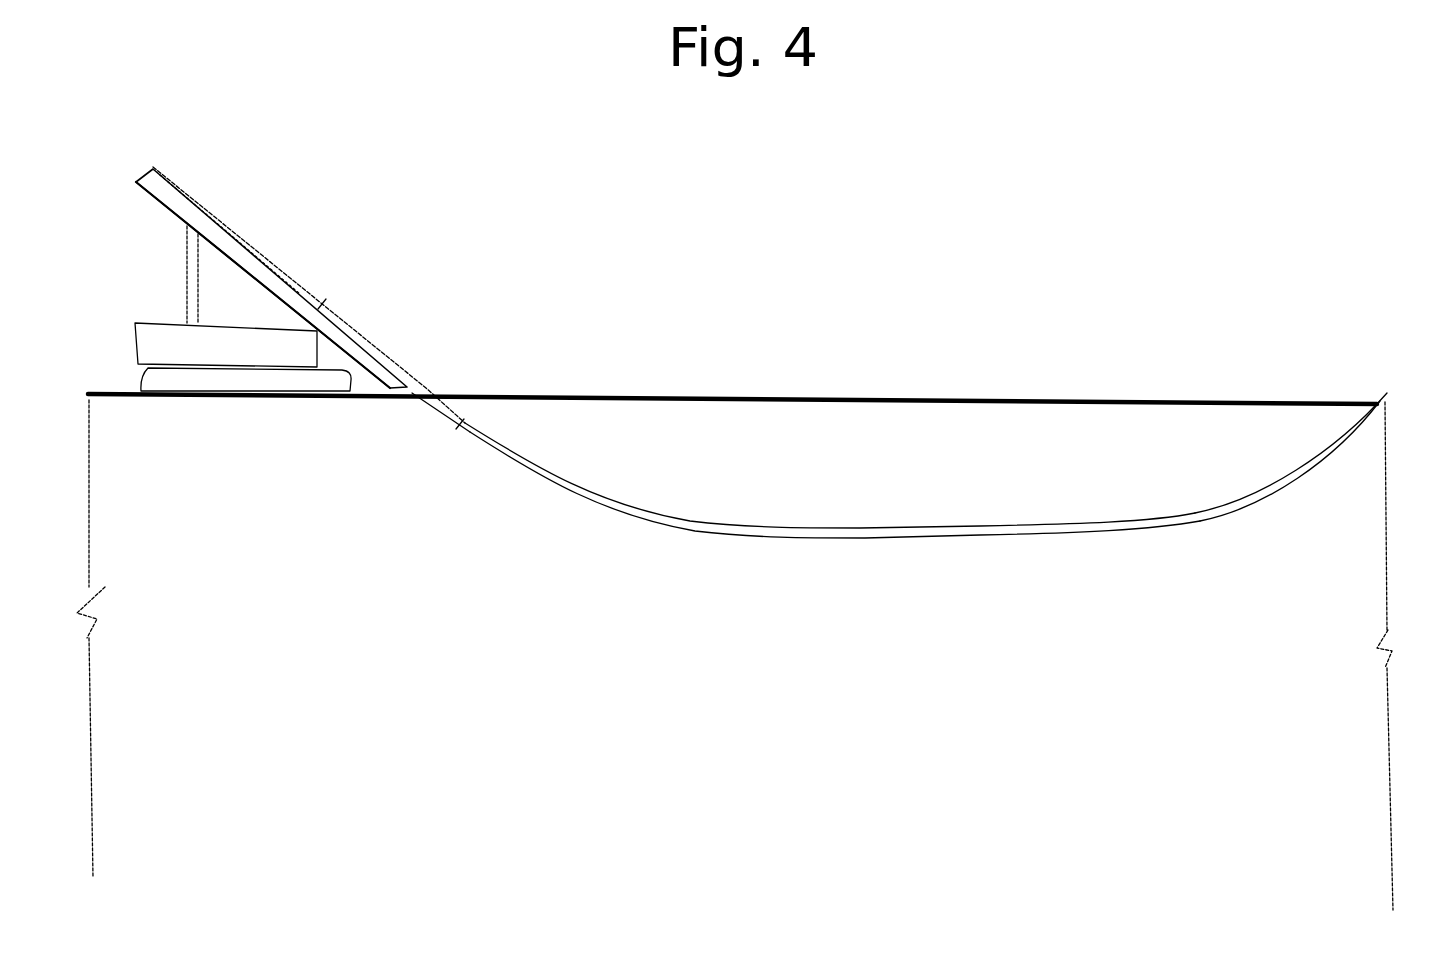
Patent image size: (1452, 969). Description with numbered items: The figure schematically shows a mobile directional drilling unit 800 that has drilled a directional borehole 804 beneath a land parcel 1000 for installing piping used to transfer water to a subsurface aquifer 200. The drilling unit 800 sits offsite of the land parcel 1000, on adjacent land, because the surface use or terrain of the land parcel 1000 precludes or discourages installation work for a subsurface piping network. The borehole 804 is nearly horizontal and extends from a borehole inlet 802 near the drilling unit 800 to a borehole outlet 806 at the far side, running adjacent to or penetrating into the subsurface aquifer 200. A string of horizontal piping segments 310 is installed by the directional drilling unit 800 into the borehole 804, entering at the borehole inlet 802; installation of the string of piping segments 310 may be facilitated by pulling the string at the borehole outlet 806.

The subsurface aquifer 200 is at (813, 669).
The land parcel 1000 is at (814, 319).
The directional drilling unit 800 is at (263, 250).
The horizontal piping segments 310 is at (294, 273).
The borehole inlet 802 is at (438, 393).
The directional borehole 804 is at (920, 540).
The borehole outlet 806 is at (1363, 388).